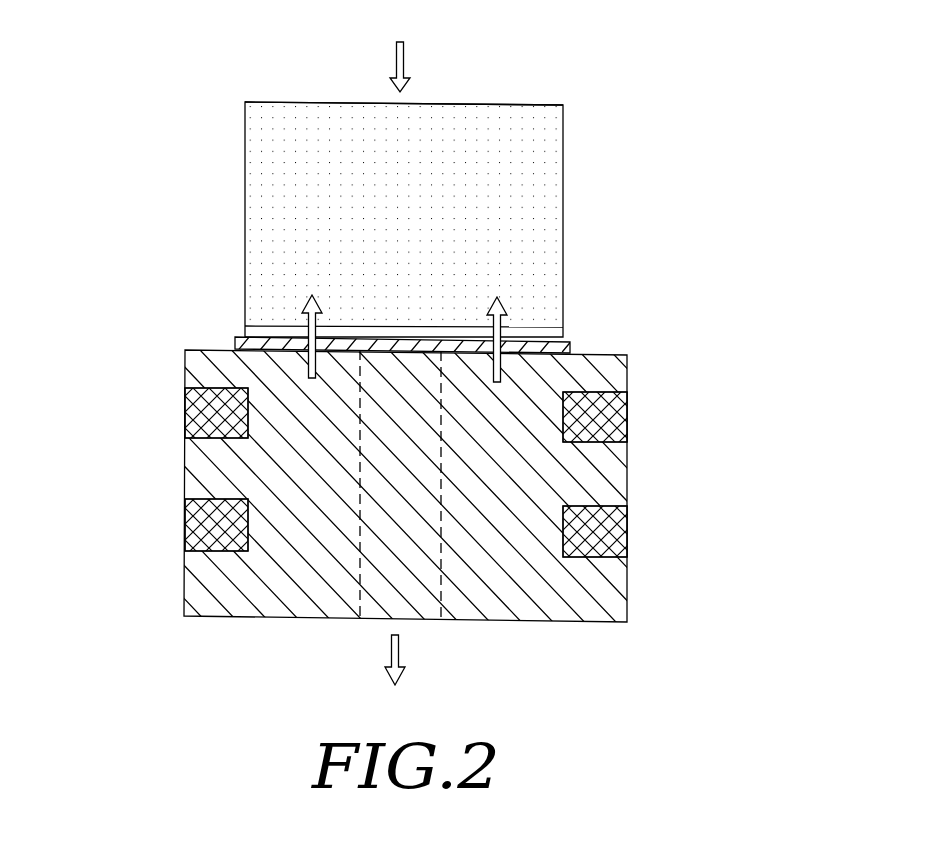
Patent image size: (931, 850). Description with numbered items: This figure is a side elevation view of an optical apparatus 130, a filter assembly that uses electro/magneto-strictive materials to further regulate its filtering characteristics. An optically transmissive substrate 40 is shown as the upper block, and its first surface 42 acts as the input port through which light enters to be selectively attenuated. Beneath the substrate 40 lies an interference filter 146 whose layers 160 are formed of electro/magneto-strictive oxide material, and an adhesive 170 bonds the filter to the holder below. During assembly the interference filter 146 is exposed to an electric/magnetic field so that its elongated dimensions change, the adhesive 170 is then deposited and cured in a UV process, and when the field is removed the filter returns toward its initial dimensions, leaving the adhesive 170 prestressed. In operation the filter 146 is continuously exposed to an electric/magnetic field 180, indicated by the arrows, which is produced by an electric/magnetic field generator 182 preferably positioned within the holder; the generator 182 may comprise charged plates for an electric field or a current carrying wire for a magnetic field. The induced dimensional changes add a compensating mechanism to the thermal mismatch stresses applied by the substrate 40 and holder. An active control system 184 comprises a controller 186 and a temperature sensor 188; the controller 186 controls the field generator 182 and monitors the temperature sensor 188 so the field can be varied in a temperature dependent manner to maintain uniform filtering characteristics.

The optically transmissive substrate 40 is at (411, 174).
The first surface 42 is at (287, 102).
The optical apparatus 130 is at (680, 117).
The interference filter 146 is at (582, 310).
The layers 160 is at (562, 337).
The adhesive 170 is at (570, 344).
The electric/magnetic field 180 is at (308, 303).
The electric/magnetic field generator 182 is at (185, 408).
The active control system 184 is at (463, 440).
The controller 186 is at (627, 540).
The temperature sensor 188 is at (185, 527).